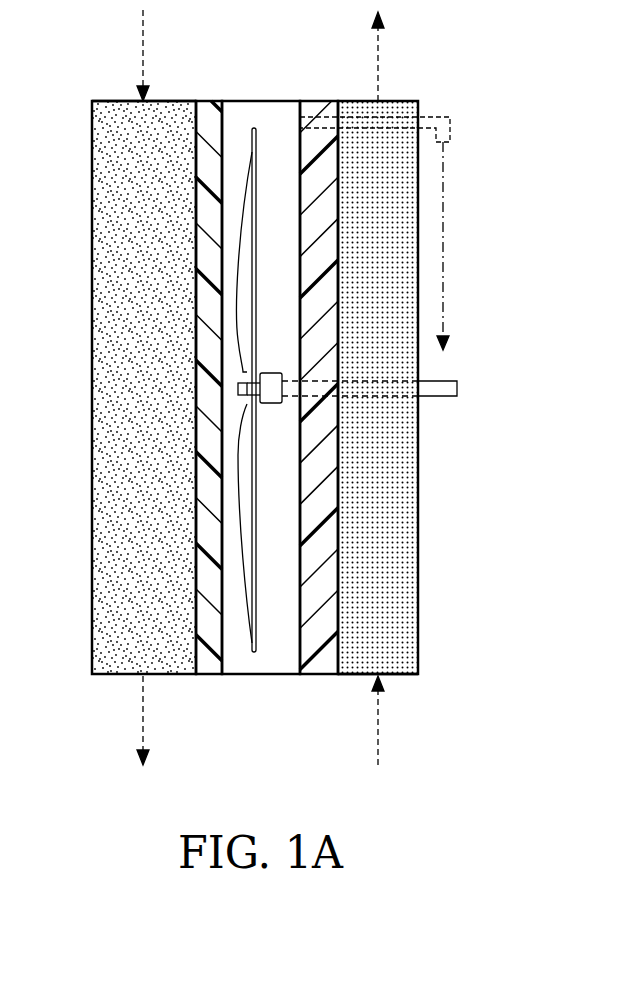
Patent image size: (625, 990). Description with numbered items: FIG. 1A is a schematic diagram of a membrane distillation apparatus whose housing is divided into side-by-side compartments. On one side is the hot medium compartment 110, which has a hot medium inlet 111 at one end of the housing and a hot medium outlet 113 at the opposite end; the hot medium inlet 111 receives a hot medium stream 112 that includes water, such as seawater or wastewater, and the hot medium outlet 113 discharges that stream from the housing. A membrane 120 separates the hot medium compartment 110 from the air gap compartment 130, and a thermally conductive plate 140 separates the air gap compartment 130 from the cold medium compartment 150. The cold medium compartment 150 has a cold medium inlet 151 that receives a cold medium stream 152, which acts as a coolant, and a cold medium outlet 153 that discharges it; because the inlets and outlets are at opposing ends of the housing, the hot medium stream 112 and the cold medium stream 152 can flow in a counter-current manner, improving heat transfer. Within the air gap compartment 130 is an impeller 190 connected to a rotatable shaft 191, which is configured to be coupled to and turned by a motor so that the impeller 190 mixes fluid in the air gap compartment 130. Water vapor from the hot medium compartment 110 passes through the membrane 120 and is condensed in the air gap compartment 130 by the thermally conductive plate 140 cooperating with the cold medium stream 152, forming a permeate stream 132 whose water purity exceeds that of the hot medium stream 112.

The hot medium compartment 110 is at (170, 406).
The hot medium inlet 111 is at (133, 98).
The hot medium stream 112 is at (146, 50).
The hot medium outlet 113 is at (133, 682).
The membrane 120 is at (208, 665).
The air gap compartment 130 is at (260, 665).
The permeate stream 132 is at (366, 130).
The thermally conductive plate 140 is at (317, 663).
The cold medium compartment 150 is at (403, 344).
The cold medium inlet 151 is at (387, 680).
The cold medium stream 152 is at (376, 746).
The cold medium outlet 153 is at (383, 97).
The impeller 190 is at (252, 152).
The rotatable shaft 191 is at (435, 398).